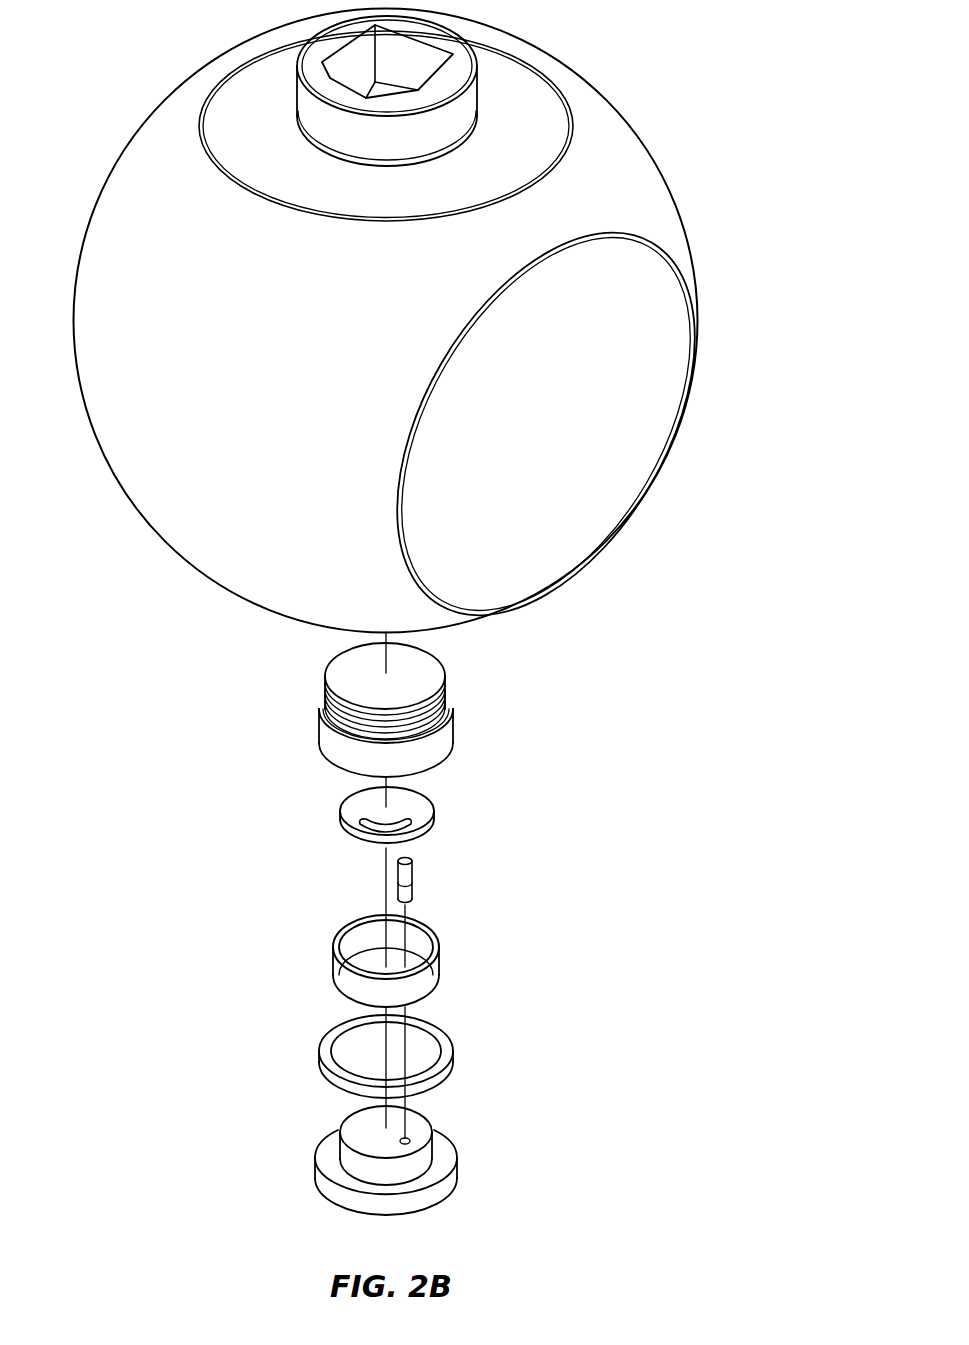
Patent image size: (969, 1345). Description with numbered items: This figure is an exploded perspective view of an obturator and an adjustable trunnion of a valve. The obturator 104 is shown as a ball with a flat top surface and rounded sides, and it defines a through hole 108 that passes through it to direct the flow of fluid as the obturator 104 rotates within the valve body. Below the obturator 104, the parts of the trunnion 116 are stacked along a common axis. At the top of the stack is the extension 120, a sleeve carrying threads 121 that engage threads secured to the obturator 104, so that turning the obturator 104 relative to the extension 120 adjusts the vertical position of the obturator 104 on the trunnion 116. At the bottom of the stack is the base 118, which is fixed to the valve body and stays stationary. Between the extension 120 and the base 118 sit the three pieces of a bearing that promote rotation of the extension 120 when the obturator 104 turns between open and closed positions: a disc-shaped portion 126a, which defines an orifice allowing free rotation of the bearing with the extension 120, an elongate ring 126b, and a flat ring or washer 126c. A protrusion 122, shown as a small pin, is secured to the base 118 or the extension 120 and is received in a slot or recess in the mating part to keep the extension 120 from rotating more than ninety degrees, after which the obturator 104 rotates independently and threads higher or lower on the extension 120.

The obturator 104 is at (627, 180).
The through hole 108 is at (617, 443).
The trunnion 116 is at (500, 923).
The base 118 is at (442, 1160).
The extension 120 is at (447, 737).
The threads 121 is at (450, 685).
The protrusion 122 is at (412, 880).
The disc-shaped portion 126a is at (440, 810).
The elongate ring 126b is at (440, 966).
The flat ring 126c is at (453, 1050).